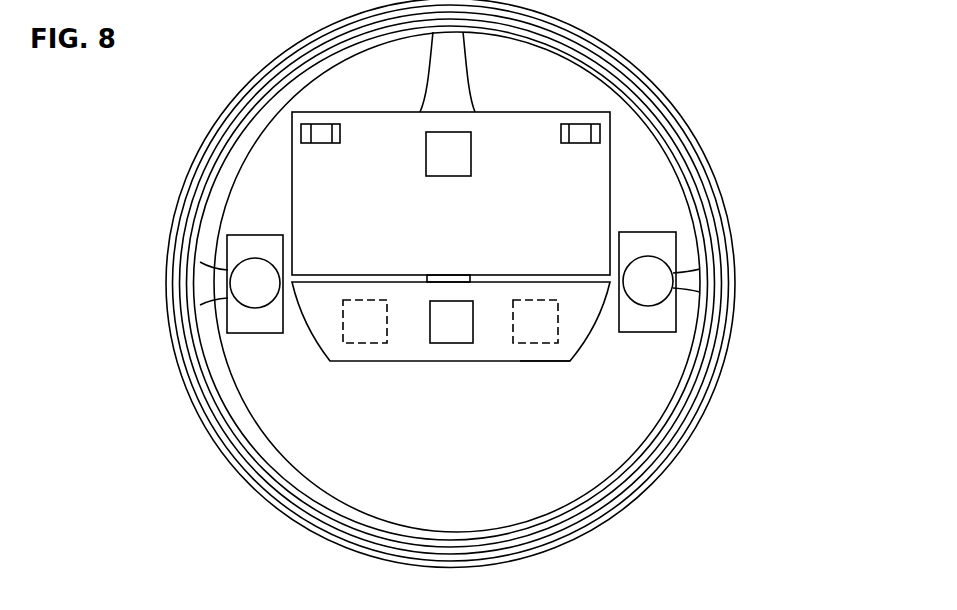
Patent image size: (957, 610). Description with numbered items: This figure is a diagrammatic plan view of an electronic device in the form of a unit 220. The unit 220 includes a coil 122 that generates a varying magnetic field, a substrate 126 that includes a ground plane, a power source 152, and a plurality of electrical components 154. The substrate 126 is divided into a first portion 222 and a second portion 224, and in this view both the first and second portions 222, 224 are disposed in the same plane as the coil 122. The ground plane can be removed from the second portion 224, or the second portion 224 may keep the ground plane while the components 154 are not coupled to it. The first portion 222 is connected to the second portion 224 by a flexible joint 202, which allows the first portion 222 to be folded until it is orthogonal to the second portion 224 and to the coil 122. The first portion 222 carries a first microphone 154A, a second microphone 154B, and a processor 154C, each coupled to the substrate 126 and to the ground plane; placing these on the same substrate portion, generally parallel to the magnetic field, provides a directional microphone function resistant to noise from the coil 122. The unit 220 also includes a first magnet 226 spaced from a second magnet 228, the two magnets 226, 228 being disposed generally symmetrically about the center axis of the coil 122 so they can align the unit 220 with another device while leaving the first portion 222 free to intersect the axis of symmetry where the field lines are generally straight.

The unit 220 is at (762, 73).
The coil 122 is at (237, 460).
The second portion 224 is at (610, 165).
The power source 152 is at (471, 147).
The electrical components 154 is at (292, 117).
The flexible joint 202 is at (452, 277).
The substrate 126 is at (583, 343).
The first portion 222 is at (545, 361).
The first microphone 154A is at (362, 343).
The second microphone 154B is at (527, 343).
The processor 154C is at (457, 343).
The second magnet 228 is at (245, 304).
The first magnet 226 is at (665, 263).